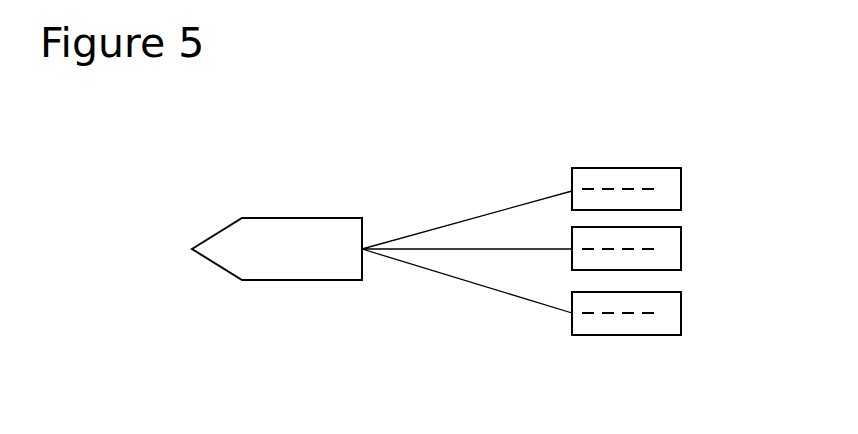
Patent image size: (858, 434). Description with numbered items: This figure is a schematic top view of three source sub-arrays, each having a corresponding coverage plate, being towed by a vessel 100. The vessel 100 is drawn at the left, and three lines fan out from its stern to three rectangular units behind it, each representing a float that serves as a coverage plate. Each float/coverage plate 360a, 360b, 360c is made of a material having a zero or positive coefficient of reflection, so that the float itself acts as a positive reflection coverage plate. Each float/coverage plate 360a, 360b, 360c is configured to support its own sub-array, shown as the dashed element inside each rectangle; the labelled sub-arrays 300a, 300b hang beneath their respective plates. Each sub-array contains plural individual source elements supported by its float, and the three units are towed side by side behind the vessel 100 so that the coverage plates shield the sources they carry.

The vessel 100 is at (300, 253).
The sub-array 300a is at (657, 188).
The sub-array 300b is at (657, 248).
The float/coverage plate 360a is at (645, 177).
The float/coverage plate 360b is at (652, 237).
The float/coverage plate 360c is at (653, 298).